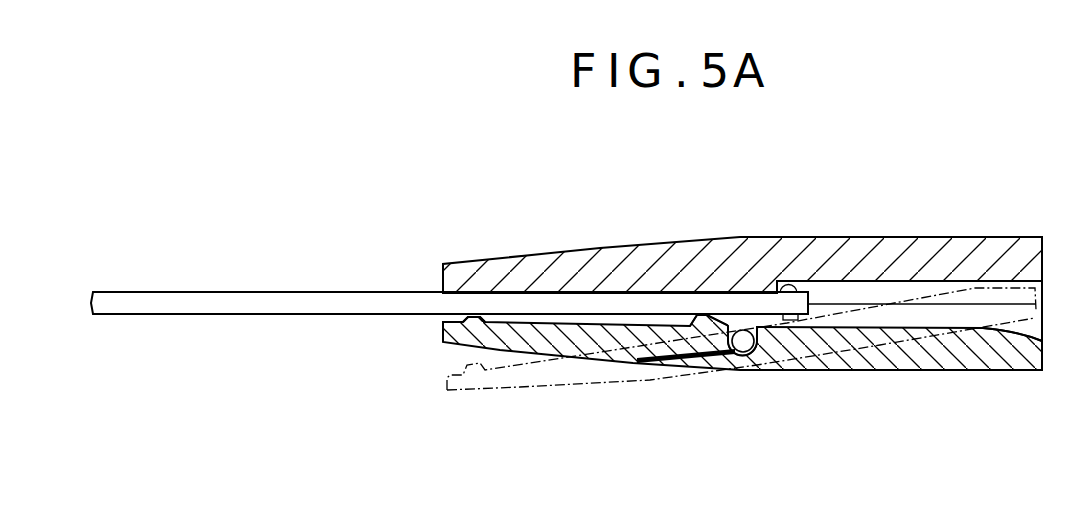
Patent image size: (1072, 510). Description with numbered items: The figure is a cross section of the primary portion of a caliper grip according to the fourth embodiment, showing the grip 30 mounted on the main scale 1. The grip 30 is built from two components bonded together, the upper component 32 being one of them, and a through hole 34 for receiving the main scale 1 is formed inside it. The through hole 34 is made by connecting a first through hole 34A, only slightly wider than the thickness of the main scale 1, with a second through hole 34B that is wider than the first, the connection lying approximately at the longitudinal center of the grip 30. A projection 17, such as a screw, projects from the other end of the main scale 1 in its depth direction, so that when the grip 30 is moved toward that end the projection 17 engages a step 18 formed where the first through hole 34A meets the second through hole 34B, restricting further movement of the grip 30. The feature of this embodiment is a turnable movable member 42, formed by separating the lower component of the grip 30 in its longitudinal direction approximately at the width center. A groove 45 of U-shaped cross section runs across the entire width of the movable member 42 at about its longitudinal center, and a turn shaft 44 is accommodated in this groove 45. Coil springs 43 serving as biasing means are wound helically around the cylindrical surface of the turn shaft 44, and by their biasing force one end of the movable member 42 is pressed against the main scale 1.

The main scale 1 is at (253, 302).
The grip 30 is at (573, 205).
The component 32 is at (1010, 252).
The through hole 34 is at (920, 287).
The first through hole 34A is at (620, 320).
The second through hole 34B is at (925, 320).
The projection 17 is at (800, 277).
The step 18 is at (788, 283).
The movable member 42 is at (540, 343).
The coil spring 43 is at (700, 352).
The turn shaft 44 is at (743, 353).
The groove 45 is at (753, 333).